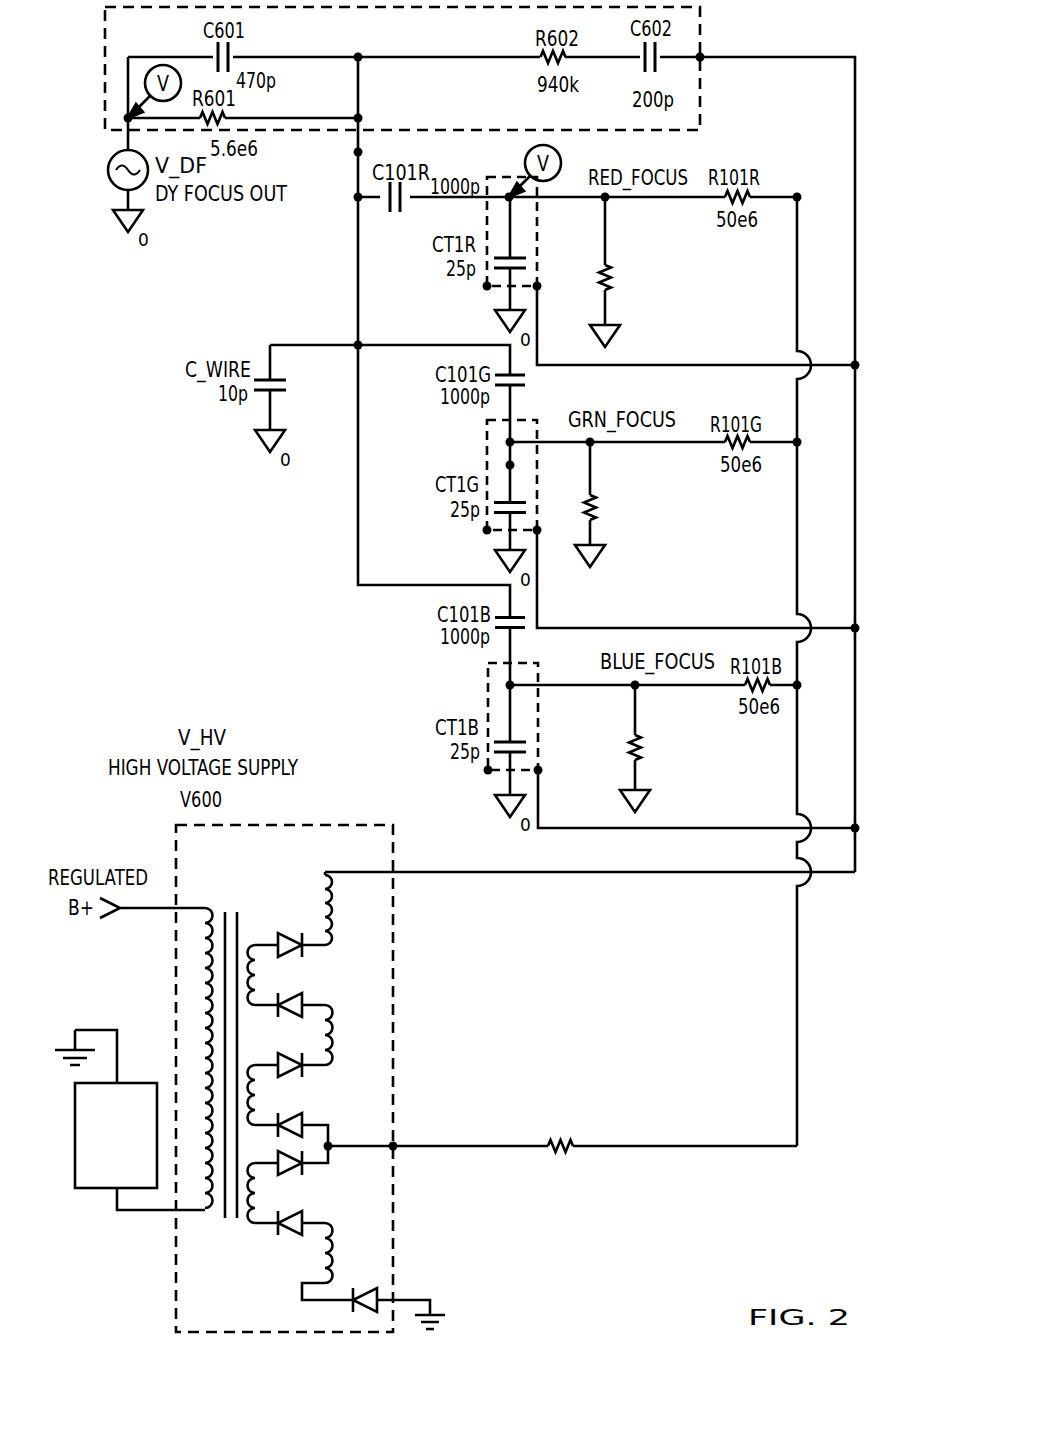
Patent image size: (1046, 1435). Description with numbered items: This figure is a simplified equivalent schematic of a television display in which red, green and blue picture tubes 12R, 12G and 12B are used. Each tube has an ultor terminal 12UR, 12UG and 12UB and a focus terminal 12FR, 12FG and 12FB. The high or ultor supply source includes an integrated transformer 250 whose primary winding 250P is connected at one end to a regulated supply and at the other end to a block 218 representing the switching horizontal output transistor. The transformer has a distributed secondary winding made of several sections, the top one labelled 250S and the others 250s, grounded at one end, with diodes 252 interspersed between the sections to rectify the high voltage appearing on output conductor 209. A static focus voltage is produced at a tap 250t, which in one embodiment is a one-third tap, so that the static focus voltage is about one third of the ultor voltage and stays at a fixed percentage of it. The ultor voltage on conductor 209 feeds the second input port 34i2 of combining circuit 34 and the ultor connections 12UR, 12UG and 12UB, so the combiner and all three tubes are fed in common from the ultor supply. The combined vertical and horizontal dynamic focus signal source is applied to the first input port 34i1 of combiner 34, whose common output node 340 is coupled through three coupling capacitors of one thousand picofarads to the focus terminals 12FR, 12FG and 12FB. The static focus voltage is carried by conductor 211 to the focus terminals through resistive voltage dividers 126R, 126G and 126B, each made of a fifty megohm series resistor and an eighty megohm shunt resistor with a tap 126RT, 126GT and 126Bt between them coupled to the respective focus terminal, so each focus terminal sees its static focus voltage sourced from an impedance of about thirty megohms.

The combining circuit 34 is at (346, 7).
The first input port of combining circuit 34i1 is at (105, 78).
The second input port of combining circuit 34i2 is at (700, 57).
The common node of dynamic focus network 340 is at (358, 152).
The red picture tube focus terminal 12FR is at (509, 197).
The red picture tube ultor terminal 12UR is at (537, 286).
The red picture tube 12R is at (487, 286).
The red resistive voltage divider 126R is at (736, 275).
The red voltage divider tap 126RT is at (605, 200).
The green picture tube focus terminal 12FG is at (510, 465).
The green picture tube ultor terminal 12UG is at (537, 530).
The green picture tube 12G is at (487, 530).
The green resistive voltage divider 126G is at (738, 529).
The green voltage divider tap 126GT is at (590, 445).
The blue picture tube focus terminal 12FB is at (510, 685).
The blue picture tube ultor terminal 12UB is at (538, 770).
The blue picture tube 12B is at (488, 770).
The blue resistive voltage divider 126B is at (773, 809).
The blue voltage divider tap 126Bt is at (635, 688).
The integrated transformer 250 is at (393, 838).
The output conductor 209 is at (670, 872).
The secondary winding section 250S is at (250, 960).
The primary winding 250P is at (205, 962).
The diodes 252 is at (305, 995).
The secondary winding sections 250s is at (265, 1100).
The tap of transformer 250t is at (393, 1148).
The static focus voltage conductor 211 is at (800, 1148).
The horizontal output transistor 218 is at (90, 1190).